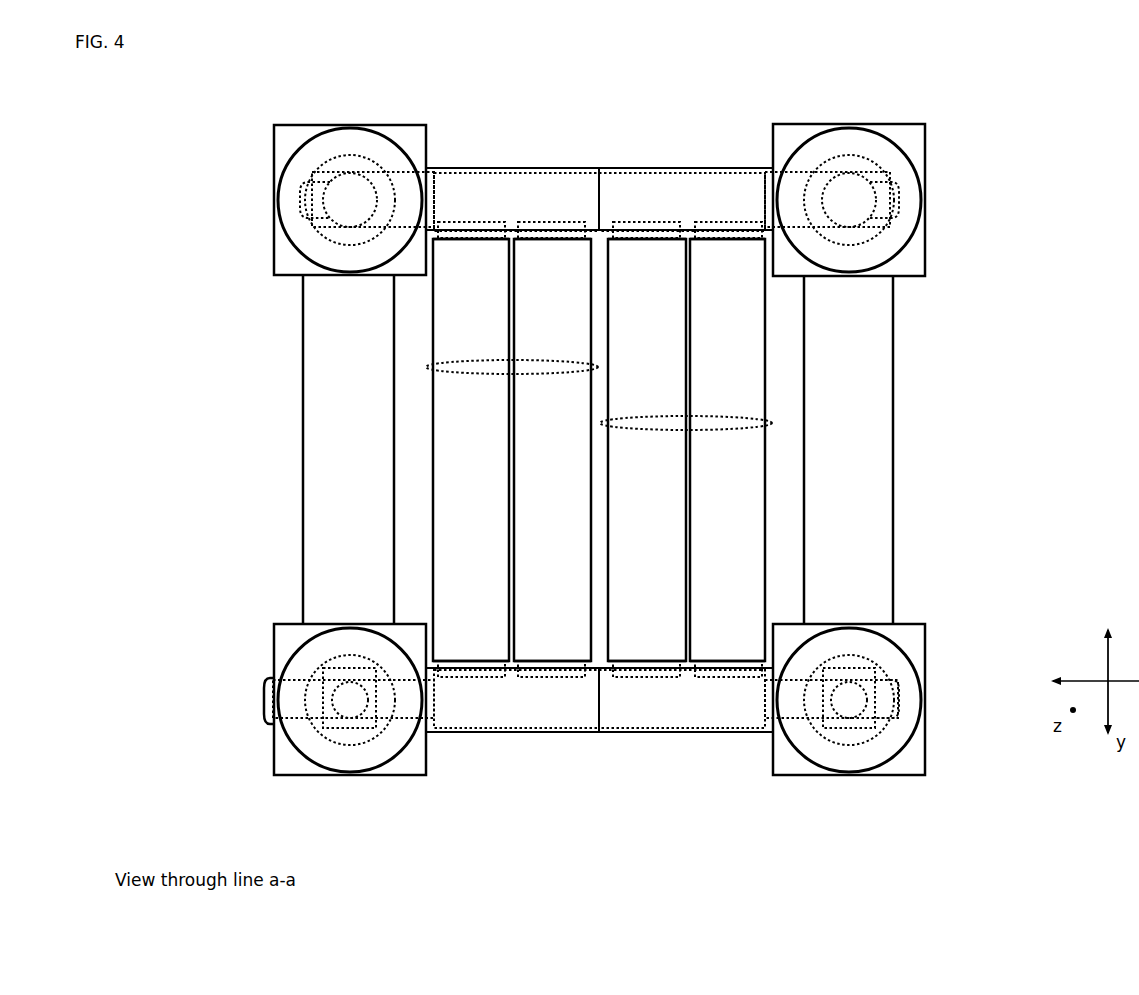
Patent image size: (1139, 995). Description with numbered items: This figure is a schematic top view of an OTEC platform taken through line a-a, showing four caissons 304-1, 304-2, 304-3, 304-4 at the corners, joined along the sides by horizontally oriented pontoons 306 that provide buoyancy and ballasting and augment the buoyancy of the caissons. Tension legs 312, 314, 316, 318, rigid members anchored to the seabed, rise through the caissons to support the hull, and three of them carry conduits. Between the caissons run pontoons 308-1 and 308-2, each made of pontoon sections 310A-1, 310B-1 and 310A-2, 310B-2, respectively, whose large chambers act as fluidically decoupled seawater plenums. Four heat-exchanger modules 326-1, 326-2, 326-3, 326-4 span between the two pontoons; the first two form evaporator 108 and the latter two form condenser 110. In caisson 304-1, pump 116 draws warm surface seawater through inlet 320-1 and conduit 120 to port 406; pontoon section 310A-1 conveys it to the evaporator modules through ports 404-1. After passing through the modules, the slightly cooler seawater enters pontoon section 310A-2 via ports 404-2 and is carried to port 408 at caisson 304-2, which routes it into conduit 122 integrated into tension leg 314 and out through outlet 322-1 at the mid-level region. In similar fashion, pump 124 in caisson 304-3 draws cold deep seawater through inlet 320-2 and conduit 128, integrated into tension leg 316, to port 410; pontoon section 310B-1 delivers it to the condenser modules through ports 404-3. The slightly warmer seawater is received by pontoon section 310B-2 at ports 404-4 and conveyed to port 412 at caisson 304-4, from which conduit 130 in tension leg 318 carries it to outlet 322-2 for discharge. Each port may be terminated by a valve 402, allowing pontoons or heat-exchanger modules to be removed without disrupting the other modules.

The evaporator 108 is at (472, 373).
The condenser 110 is at (733, 420).
The pump 116 is at (348, 727).
The conduit 120 is at (297, 690).
The conduit 122 is at (318, 190).
The pump 124 is at (868, 730).
The conduit 128 is at (885, 700).
The conduit 130 is at (885, 185).
The caisson 304-1 is at (262, 790).
The caisson 304-2 is at (260, 300).
The caisson 304-3 is at (938, 790).
The caisson 304-4 is at (940, 300).
The pontoon 306 is at (363, 467).
The pontoon 308-1 is at (580, 795).
The pontoon 308-2 is at (586, 108).
The pontoon section 310A-1 is at (478, 732).
The pontoon section 310B-1 is at (725, 732).
The pontoon section 310A-2 is at (478, 168).
The pontoon section 310B-2 is at (725, 168).
The tension leg 312 is at (343, 660).
The tension leg 314 is at (345, 165).
The tension leg 316 is at (848, 663).
The tension leg 318 is at (848, 165).
The inlet 320-1 is at (265, 700).
The inlet 320-2 is at (897, 680).
The outlet 322-1 is at (285, 197).
The outlet 322-2 is at (912, 197).
The heat-exchanger module 326-1 is at (498, 502).
The heat-exchanger module 326-2 is at (576, 502).
The heat-exchanger module 326-3 is at (668, 502).
The heat-exchanger module 326-4 is at (752, 502).
The valve 402 is at (560, 226).
The port 404-1 is at (480, 660).
The port 404-2 is at (578, 275).
The port 404-3 is at (655, 660).
The port 404-4 is at (750, 275).
The port 406 is at (406, 710).
The port 408 is at (402, 190).
The port 410 is at (795, 707).
The port 412 is at (795, 190).